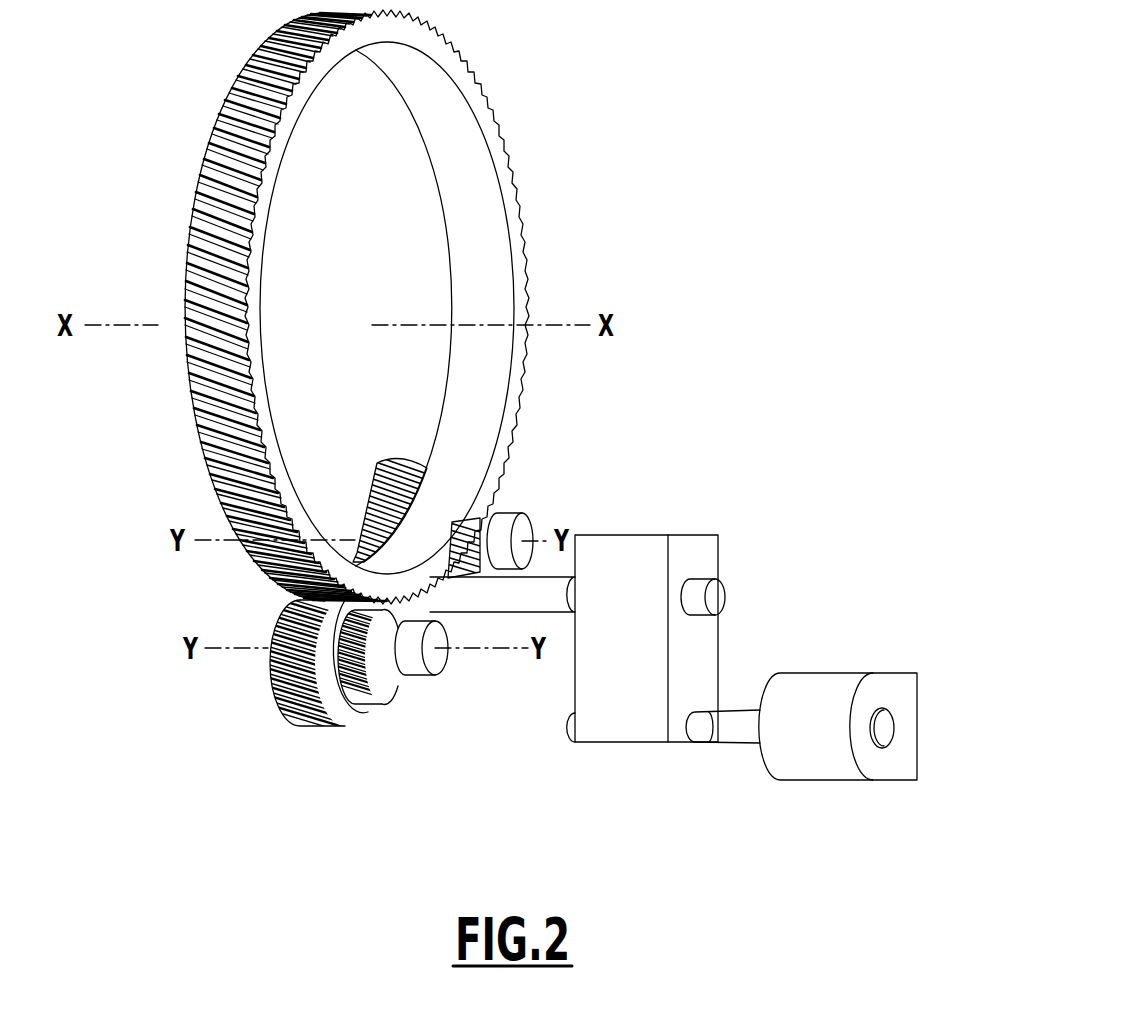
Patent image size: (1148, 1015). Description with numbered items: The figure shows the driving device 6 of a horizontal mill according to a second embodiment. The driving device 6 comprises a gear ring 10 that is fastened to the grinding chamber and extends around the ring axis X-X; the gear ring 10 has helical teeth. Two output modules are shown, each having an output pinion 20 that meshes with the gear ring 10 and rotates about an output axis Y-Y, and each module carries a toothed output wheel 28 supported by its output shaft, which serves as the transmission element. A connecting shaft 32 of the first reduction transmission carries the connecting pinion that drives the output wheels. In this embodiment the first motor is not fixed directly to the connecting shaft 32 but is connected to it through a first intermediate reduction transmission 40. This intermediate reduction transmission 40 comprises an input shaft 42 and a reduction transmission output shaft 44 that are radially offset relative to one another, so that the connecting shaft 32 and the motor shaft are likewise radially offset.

The driving device 6 is at (262, 780).
The gear ring 10 is at (483, 123).
The output pinion 20 is at (508, 500).
The toothed output wheel 28 is at (385, 492).
The connecting shaft 32 is at (550, 588).
The first intermediate reduction transmission 40 is at (640, 547).
The input shaft 42 is at (695, 728).
The reduction transmission output shaft 44 is at (702, 580).